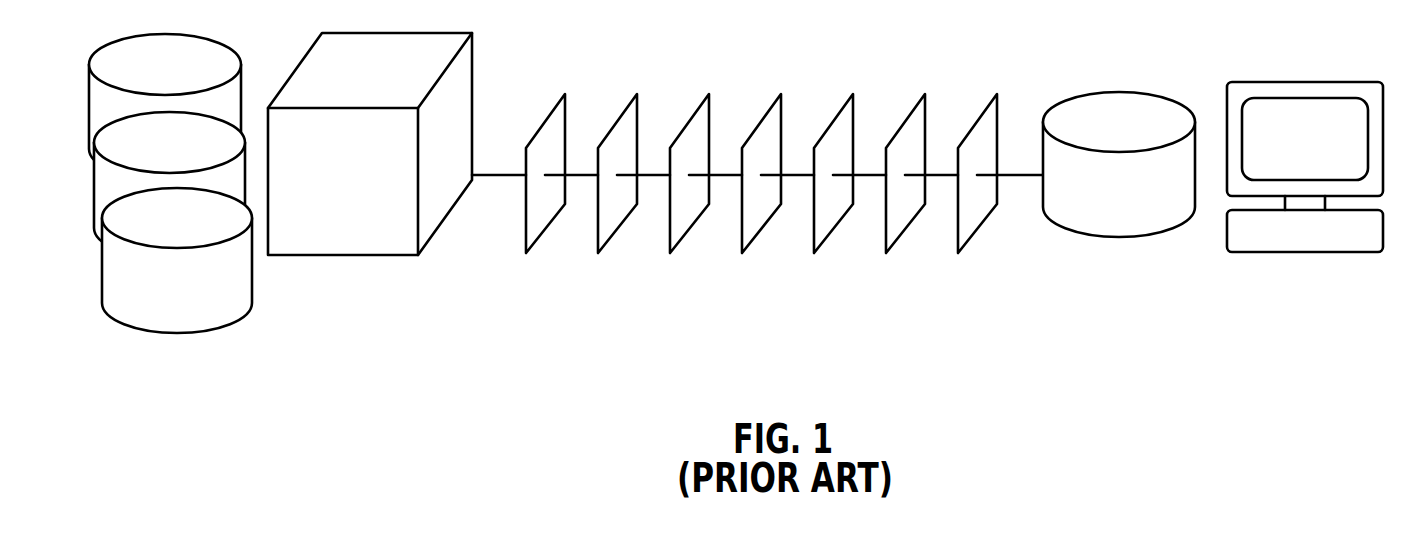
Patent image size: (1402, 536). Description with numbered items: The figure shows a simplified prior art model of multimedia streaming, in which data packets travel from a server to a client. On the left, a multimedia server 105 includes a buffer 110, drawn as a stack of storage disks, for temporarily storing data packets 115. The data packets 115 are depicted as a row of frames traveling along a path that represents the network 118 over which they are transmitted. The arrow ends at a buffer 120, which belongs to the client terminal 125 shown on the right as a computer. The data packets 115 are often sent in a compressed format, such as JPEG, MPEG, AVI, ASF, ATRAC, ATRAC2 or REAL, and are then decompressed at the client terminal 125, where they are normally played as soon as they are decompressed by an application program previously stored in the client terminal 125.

The multimedia server 105 is at (373, 258).
The buffer 110 is at (223, 327).
The data packets 115 is at (555, 213).
The network 118 is at (720, 178).
The buffer 120 is at (1080, 235).
The client terminal 125 is at (1232, 255).